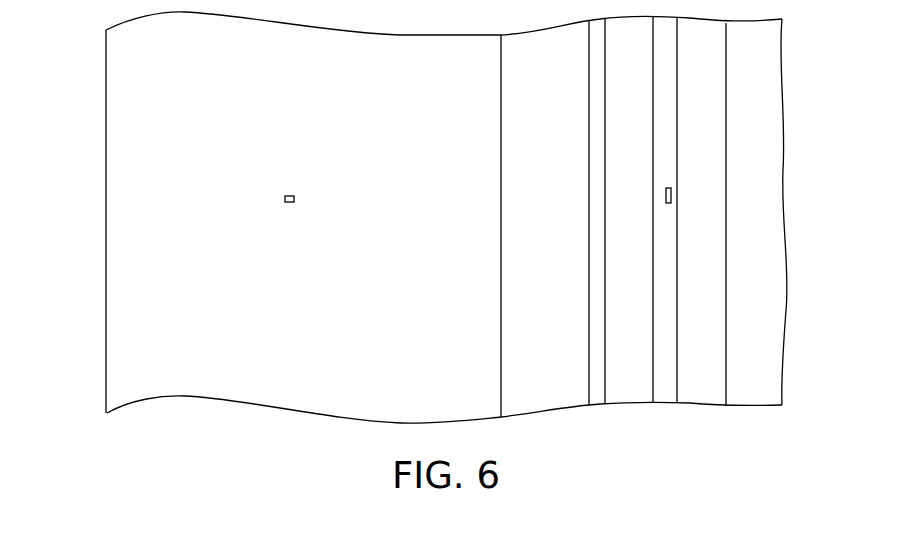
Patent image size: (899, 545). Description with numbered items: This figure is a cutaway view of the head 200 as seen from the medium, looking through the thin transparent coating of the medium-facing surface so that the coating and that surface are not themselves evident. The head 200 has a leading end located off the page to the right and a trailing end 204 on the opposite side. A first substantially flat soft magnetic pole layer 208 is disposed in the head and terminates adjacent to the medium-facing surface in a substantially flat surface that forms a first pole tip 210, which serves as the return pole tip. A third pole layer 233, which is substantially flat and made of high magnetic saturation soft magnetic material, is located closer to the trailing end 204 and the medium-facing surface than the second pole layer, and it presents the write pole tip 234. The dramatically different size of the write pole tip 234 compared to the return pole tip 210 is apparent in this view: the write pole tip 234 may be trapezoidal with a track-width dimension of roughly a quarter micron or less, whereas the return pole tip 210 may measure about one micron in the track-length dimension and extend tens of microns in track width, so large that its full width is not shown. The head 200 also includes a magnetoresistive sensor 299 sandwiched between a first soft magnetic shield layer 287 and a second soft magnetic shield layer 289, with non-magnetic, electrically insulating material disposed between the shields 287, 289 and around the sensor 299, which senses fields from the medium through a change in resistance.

The head 200 is at (136, 434).
The trailing end 204 is at (104, 222).
The first substantially flat soft magnetic pole layer 208 is at (501, 248).
The first pole tip 210 is at (535, 183).
The third pole layer 233 is at (288, 196).
The write pole tip 234 is at (293, 206).
The first soft magnetic shield layer 287 is at (726, 197).
The second soft magnetic shield layer 289 is at (605, 103).
The magnetoresistive (MR) sensor 299 is at (666, 196).